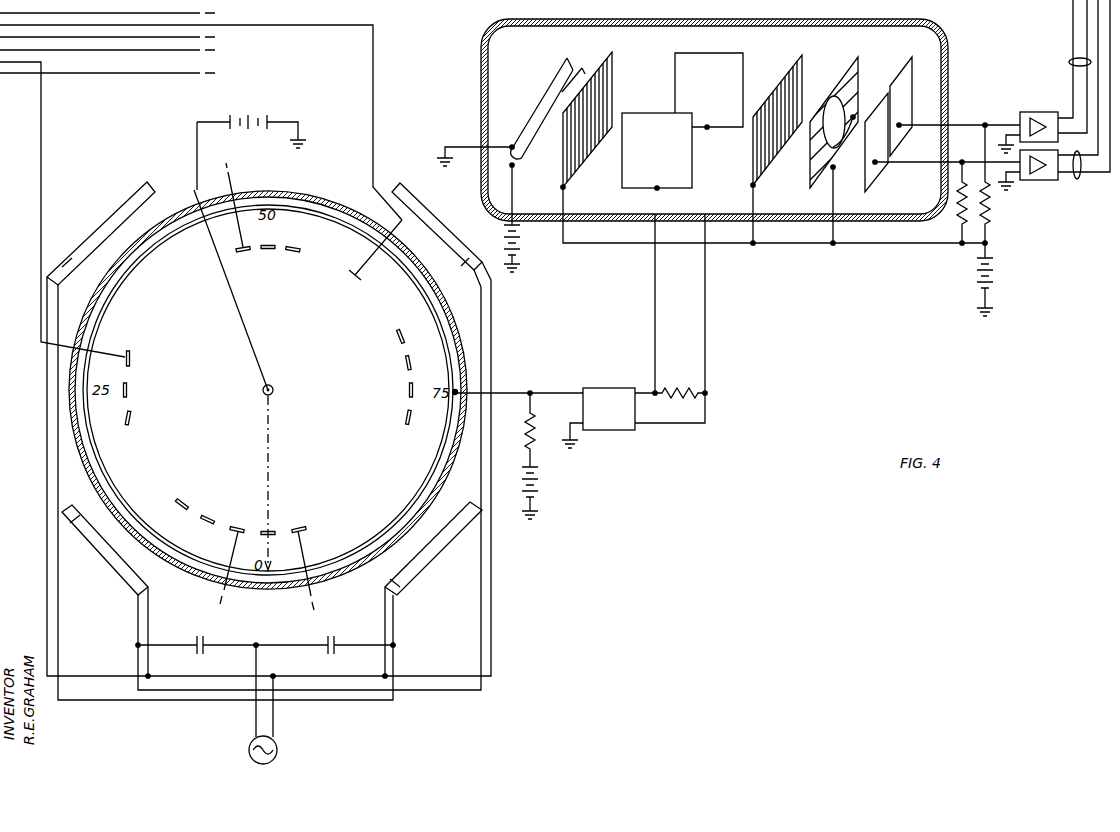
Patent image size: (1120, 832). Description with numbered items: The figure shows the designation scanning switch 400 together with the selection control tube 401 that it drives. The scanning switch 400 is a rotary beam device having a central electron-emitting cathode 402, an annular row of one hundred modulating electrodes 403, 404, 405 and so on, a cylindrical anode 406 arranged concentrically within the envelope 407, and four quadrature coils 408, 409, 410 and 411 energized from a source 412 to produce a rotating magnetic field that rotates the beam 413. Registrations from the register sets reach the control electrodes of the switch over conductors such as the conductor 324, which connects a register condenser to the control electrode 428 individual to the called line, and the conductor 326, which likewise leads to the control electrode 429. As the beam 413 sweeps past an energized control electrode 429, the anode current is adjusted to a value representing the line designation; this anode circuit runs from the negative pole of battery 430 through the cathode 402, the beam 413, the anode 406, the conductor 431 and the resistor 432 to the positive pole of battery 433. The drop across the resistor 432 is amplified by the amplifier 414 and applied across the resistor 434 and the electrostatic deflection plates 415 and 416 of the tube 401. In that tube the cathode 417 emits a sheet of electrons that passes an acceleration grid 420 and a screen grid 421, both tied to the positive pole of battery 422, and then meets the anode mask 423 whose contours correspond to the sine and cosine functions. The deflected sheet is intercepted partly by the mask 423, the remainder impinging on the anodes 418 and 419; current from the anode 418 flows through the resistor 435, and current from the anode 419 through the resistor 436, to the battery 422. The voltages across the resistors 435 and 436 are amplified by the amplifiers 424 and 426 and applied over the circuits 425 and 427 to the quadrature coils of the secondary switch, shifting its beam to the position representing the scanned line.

The conductor 324 is at (276, 25).
The conductor 326 is at (41, 139).
The designation scanning switch 400 is at (239, 290).
The selection control tube 401 is at (740, 22).
The central electron-emitting cathode 402 is at (274, 387).
The modulating electrode 403 is at (272, 530).
The modulating electrode 404 is at (240, 527).
The modulating electrode 405 is at (210, 514).
The cylindrical anode 406 is at (424, 498).
The envelope 407 is at (80, 462).
The quadrature coil 408 is at (422, 560).
The quadrature coil 409 is at (112, 207).
The quadrature coil 410 is at (108, 558).
The quadrature coil 411 is at (452, 228).
The source 412 is at (275, 740).
The beam 413 is at (270, 460).
The amplifier 414 is at (600, 388).
The electrostatic deflection plate 415 is at (634, 190).
The electrostatic deflection plate 416 is at (708, 53).
The electron-emitting cathode 417 is at (546, 95).
The anode 418 is at (876, 182).
The anode 419 is at (899, 72).
The acceleration grid 420 is at (589, 158).
The screen grid 421 is at (776, 156).
The battery 422 is at (996, 282).
The anode mask 423 is at (840, 95).
The amplifier 424 is at (1042, 181).
The circuit 425 is at (1078, 178).
The amplifier 426 is at (1028, 112).
The circuit 427 is at (1069, 62).
The control electrode 428 is at (351, 279).
The control electrode 429 is at (131, 357).
The battery 430 is at (252, 113).
The conductor 431 is at (511, 392).
The resistor 432 is at (534, 422).
The battery 433 is at (536, 490).
The resistor 434 is at (677, 384).
The resistor 435 is at (956, 222).
The resistor 436 is at (992, 218).